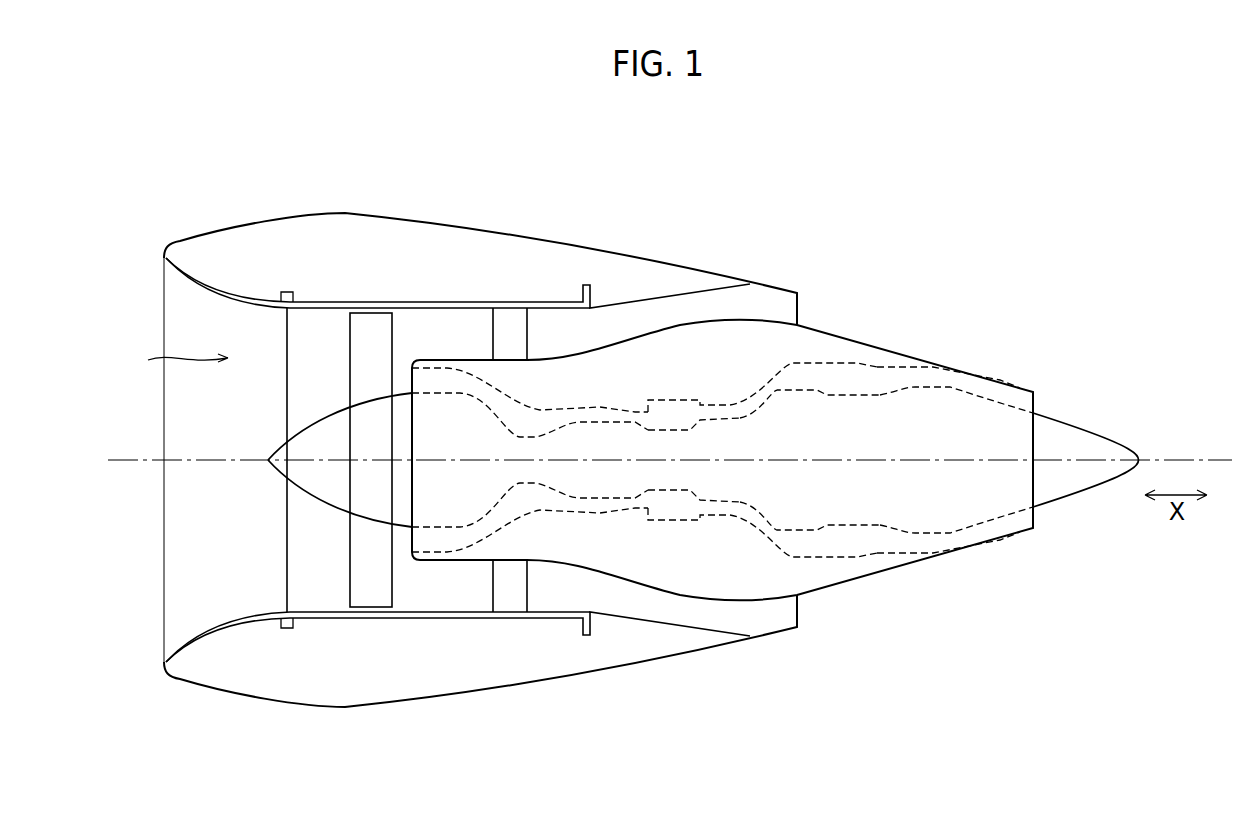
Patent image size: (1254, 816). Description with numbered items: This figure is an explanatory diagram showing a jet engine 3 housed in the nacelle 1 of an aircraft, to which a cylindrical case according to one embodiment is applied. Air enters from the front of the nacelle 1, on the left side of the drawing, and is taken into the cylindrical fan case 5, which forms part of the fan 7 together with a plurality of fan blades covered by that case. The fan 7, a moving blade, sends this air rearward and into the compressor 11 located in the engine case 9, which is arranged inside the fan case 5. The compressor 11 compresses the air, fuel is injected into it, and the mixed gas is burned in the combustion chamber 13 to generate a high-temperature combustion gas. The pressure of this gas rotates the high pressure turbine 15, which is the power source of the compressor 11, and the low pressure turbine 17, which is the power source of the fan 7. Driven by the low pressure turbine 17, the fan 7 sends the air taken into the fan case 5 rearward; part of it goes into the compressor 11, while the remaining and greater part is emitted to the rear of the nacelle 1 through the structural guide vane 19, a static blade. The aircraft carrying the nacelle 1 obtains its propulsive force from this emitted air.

The nacelle 1 is at (267, 215).
The jet engine 3 is at (177, 363).
The fan case 5 is at (397, 302).
The fan 7 is at (351, 589).
The engine case 9 is at (623, 338).
The compressor 11 is at (551, 503).
The combustion chamber 13 is at (665, 510).
The high pressure turbine 15 is at (747, 520).
The low pressure turbine 17 is at (853, 545).
The structural guide vane 19 is at (513, 322).